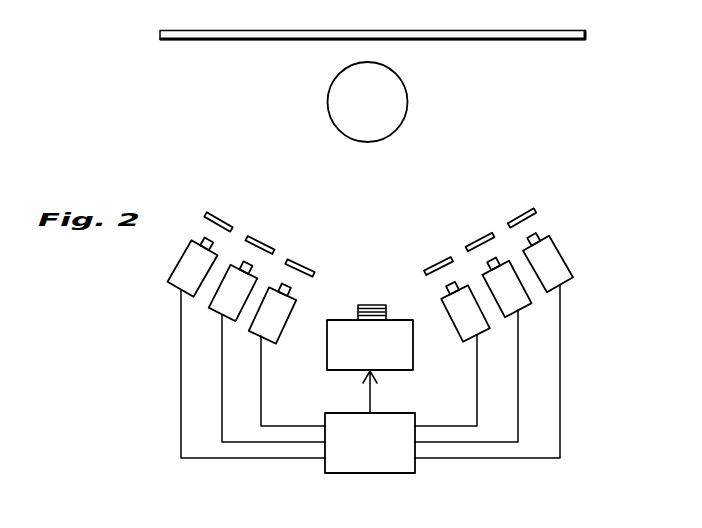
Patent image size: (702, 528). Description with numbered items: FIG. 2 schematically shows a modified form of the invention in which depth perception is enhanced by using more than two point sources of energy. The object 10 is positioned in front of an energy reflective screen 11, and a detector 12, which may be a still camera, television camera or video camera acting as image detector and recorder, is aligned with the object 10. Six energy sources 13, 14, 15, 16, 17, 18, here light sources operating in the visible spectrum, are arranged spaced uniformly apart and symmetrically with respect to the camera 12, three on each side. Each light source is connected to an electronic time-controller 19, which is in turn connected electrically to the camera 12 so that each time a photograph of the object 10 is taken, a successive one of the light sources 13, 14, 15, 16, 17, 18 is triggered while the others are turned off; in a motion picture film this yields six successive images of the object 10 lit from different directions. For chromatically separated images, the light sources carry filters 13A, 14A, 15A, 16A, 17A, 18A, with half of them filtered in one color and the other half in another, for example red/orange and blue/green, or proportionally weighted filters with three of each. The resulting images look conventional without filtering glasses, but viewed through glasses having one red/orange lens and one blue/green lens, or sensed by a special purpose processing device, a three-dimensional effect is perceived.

The object 10 is at (381, 110).
The energy reflective screen 11 is at (228, 41).
The detector 12 is at (383, 353).
The energy source 13 is at (175, 286).
The filter 13A is at (228, 220).
The energy source 14 is at (215, 313).
The filter 14A is at (265, 243).
The energy source 15 is at (257, 337).
The filter 15A is at (305, 267).
The energy source 16 is at (468, 342).
The filter 16A is at (437, 265).
The energy source 17 is at (527, 308).
The filter 17A is at (473, 245).
The energy source 18 is at (568, 283).
The filter 18A is at (522, 215).
The electronic time-controller 19 is at (382, 457).